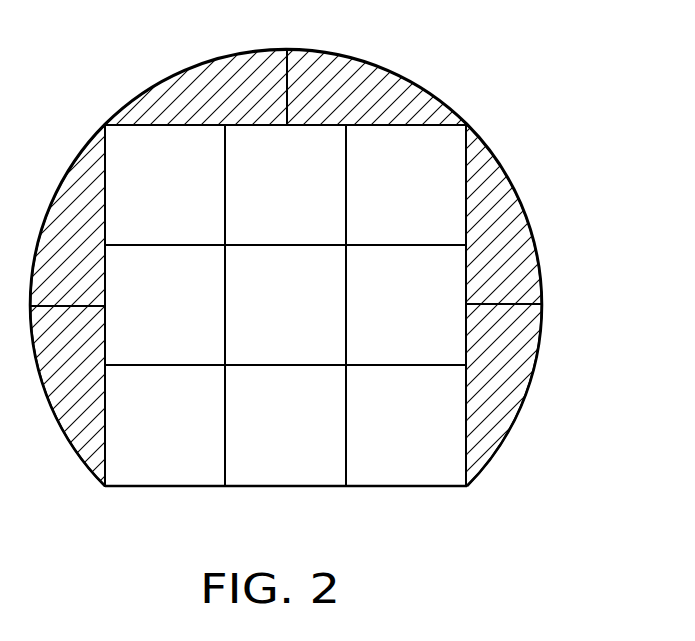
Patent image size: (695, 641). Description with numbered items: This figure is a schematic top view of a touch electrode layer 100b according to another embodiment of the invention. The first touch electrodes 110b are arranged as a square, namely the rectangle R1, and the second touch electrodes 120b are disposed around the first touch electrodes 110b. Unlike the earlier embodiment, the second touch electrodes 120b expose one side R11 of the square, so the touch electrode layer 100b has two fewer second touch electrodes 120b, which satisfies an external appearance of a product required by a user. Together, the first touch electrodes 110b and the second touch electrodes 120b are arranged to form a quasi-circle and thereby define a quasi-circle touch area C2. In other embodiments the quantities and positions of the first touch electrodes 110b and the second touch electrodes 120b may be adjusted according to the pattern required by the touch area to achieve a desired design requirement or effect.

The touch electrode layer 100b is at (347, 288).
The first touch electrodes 110b is at (433, 180).
The second touch electrodes 120b is at (500, 244).
The rectangle R1 is at (387, 108).
The one side of the square R11 is at (418, 487).
The quasi-circle touch area C2 is at (482, 117).